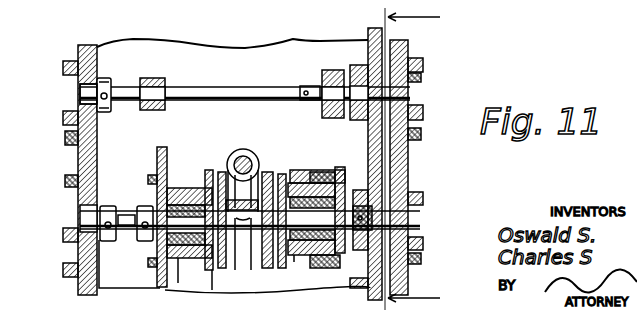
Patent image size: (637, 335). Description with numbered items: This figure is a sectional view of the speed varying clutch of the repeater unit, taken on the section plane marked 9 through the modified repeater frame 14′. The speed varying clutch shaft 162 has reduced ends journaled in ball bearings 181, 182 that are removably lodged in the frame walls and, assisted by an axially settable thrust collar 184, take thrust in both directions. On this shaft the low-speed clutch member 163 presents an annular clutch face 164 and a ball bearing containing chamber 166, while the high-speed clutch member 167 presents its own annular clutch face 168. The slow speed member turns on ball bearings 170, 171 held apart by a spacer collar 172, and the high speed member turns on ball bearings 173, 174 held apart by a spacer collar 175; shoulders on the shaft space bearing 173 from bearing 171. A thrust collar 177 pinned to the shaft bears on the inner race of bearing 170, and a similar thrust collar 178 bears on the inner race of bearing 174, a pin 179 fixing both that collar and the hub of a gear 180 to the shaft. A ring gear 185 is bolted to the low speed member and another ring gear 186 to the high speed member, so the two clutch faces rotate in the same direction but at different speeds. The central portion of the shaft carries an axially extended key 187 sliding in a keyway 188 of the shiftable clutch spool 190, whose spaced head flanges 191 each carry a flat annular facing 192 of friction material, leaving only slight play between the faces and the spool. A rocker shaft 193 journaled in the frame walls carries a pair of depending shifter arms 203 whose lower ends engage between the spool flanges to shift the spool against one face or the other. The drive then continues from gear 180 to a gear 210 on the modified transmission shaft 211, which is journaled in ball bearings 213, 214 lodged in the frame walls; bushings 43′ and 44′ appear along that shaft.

The section line 9 is at (414, 160).
The repeater frame 14′ is at (78, 160).
The bushing 43′ is at (325, 72).
The bushing 44′ is at (162, 78).
The speed varying clutch shaft 162 is at (410, 216).
The low-speed clutch member 163 is at (160, 282).
The annular clutch face 164 is at (192, 200).
The ball bearing containing chamber 166 is at (178, 152).
The high-speed clutch member 167 is at (294, 262).
The annular clutch face 168 is at (304, 170).
The ball bearing 170 is at (157, 163).
The ball bearing 171 is at (198, 188).
The spacer collar 172 is at (186, 283).
The ball bearing 173 is at (298, 183).
The ball bearing 174 is at (342, 170).
The spacer collar 175 is at (290, 258).
The thrust collar 177 is at (140, 243).
The thrust collar 178 is at (338, 262).
The pin 179 is at (356, 192).
The gear 180 is at (350, 288).
The ball bearing 181 is at (78, 222).
The ball bearing 182 is at (410, 200).
The thrust collar 184 is at (115, 200).
The ring gear 185 is at (150, 160).
The ring gear 186 is at (330, 197).
The key 187 is at (268, 172).
The keyway 188 is at (221, 172).
The clutch spool 190 is at (226, 272).
The head flanges 191 is at (208, 270).
The annular facing 192 is at (208, 170).
The rocker shaft 193 is at (257, 160).
The shifter arms 203 is at (243, 149).
The gear 210 is at (368, 33).
The transmission shaft 211 is at (230, 87).
The ball bearing 213 is at (78, 90).
The ball bearing 214 is at (410, 80).